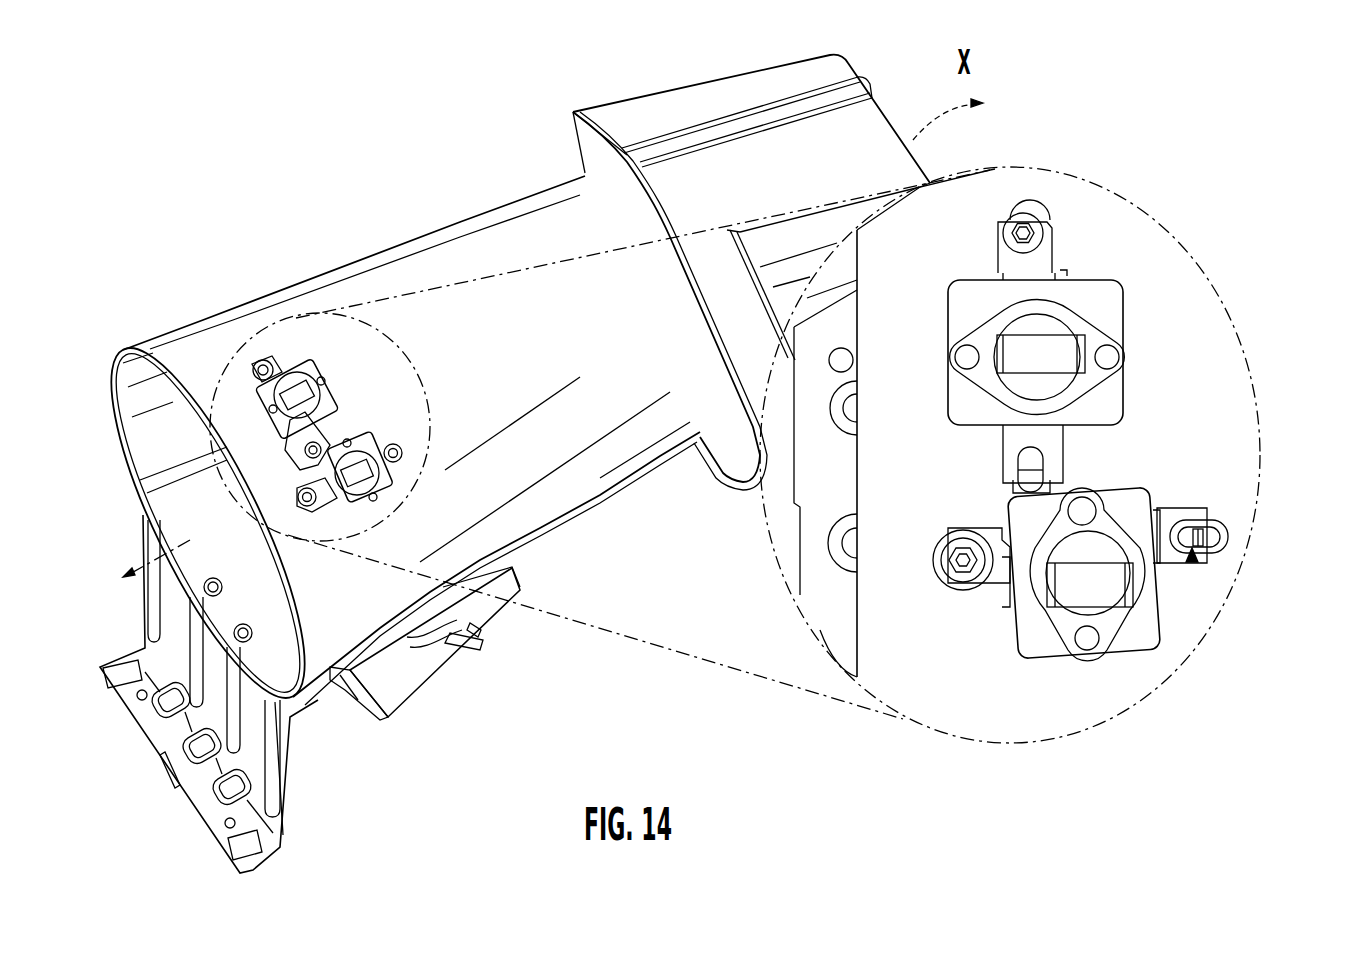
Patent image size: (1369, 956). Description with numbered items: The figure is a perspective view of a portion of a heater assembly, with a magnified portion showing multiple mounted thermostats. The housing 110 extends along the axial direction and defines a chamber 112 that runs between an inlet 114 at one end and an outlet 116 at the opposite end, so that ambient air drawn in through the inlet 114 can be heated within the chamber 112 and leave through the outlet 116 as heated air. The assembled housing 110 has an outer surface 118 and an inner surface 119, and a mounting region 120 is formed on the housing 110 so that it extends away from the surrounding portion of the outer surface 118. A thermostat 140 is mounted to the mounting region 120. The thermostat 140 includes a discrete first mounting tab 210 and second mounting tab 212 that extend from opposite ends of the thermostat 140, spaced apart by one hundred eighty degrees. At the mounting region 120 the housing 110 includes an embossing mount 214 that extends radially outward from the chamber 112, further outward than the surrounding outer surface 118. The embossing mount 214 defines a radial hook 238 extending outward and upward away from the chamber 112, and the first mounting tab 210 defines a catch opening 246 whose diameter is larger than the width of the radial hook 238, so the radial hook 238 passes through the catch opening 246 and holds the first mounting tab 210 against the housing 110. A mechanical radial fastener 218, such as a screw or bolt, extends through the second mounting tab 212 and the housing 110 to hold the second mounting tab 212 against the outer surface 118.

The housing 110 is at (386, 257).
The chamber 112 is at (198, 362).
The inlet 114 is at (140, 497).
The outlet 116 is at (896, 92).
The outer surface 118 is at (487, 233).
The inner surface 119 is at (147, 440).
The mounting region 120 is at (420, 470).
The thermostat 140 is at (367, 475).
The first mounting tab 210 is at (1257, 498).
The second mounting tab 212 is at (988, 574).
The embossing mount 214 is at (1267, 532).
The radial fastener 218 is at (963, 563).
The radial hook 238 is at (1212, 539).
The catch opening 246 is at (1195, 556).